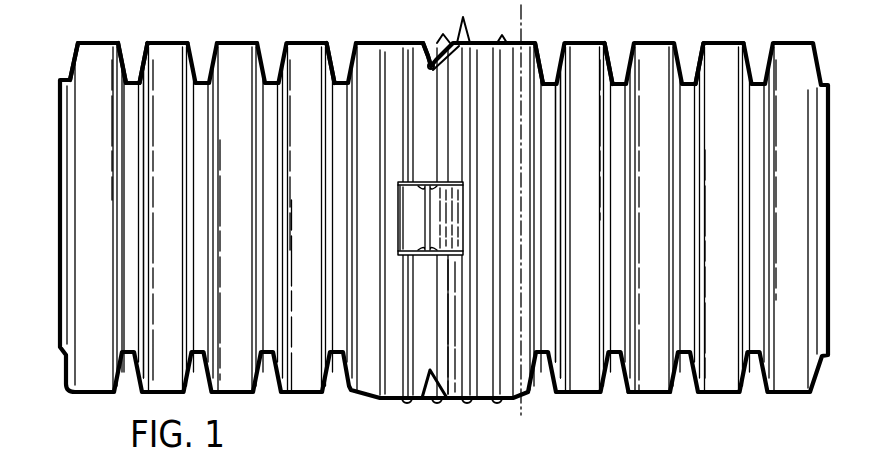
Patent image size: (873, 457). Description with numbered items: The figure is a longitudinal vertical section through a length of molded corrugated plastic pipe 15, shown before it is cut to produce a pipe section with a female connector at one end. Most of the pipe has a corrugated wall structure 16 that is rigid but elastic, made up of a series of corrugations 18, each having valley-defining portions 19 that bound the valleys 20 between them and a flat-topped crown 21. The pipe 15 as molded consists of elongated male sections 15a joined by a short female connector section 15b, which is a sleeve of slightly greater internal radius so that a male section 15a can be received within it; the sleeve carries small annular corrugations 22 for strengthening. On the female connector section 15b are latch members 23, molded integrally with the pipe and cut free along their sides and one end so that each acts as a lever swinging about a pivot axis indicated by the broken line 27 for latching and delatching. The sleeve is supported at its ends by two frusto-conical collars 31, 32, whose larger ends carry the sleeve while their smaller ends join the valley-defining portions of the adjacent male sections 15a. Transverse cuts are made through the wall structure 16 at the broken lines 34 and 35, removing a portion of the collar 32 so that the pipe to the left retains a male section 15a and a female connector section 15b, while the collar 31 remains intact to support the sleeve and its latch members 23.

The corrugated pipe 15 is at (723, 42).
The male section 15a is at (703, 70).
The female connector section 15b is at (390, 42).
The wall structure 16 is at (224, 50).
The corrugation 18 is at (72, 58).
The valley-defining portion 19 is at (131, 78).
The valley 20 is at (133, 56).
The crown 21 is at (100, 40).
The annular corrugation 22 is at (469, 37).
The latch member 23 is at (430, 176).
The axis of pivot 27 is at (462, 263).
The collar 31 is at (362, 42).
The collar 32 is at (527, 43).
The broken line 34 is at (557, 123).
The broken line 35 is at (522, 183).